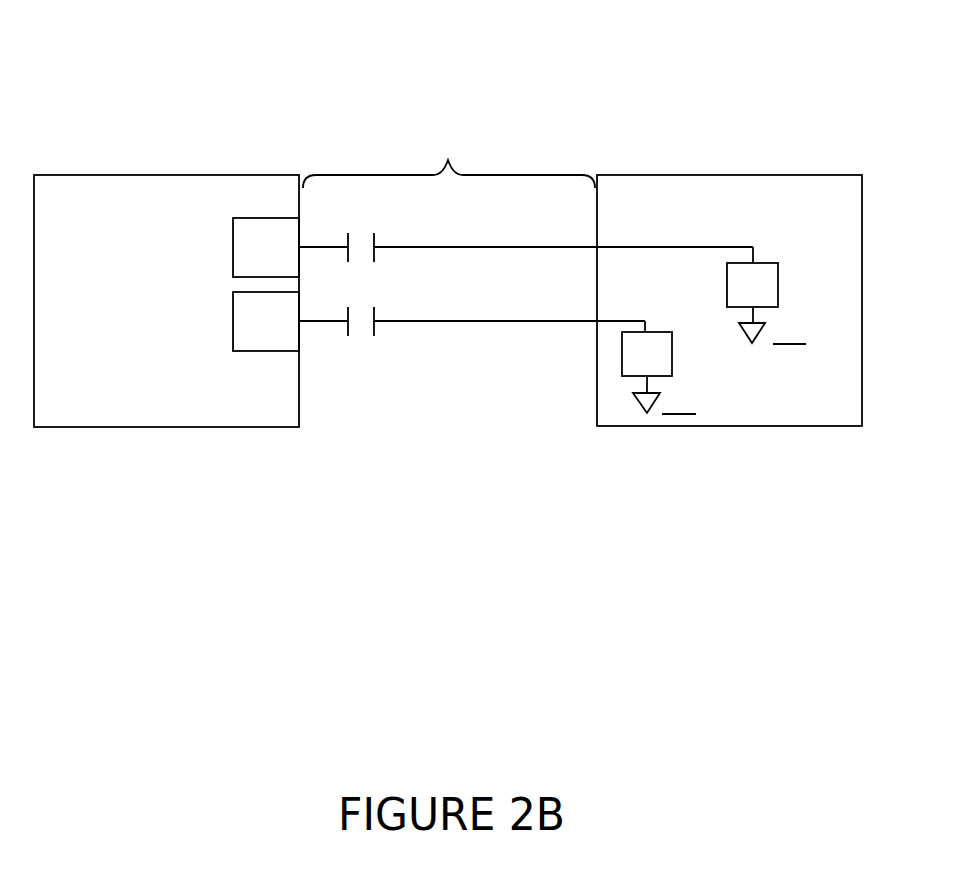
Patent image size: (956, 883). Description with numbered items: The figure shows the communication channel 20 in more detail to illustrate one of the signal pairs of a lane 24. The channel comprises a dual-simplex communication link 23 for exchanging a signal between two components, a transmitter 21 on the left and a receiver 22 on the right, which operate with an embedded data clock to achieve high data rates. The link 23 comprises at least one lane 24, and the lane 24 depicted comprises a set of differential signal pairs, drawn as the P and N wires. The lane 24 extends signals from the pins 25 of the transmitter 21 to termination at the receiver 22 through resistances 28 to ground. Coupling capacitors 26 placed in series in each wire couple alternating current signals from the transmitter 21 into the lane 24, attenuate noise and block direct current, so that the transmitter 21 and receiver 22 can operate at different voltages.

The communication channel 20 is at (57, 47).
The transmitter 21 is at (65, 237).
The receiver 22 is at (845, 237).
The communication link 23 is at (526, 233).
The lane 24 is at (440, 240).
The pins 25 is at (277, 274).
The coupling capacitors 26 is at (393, 289).
The resistances 28 is at (803, 303).